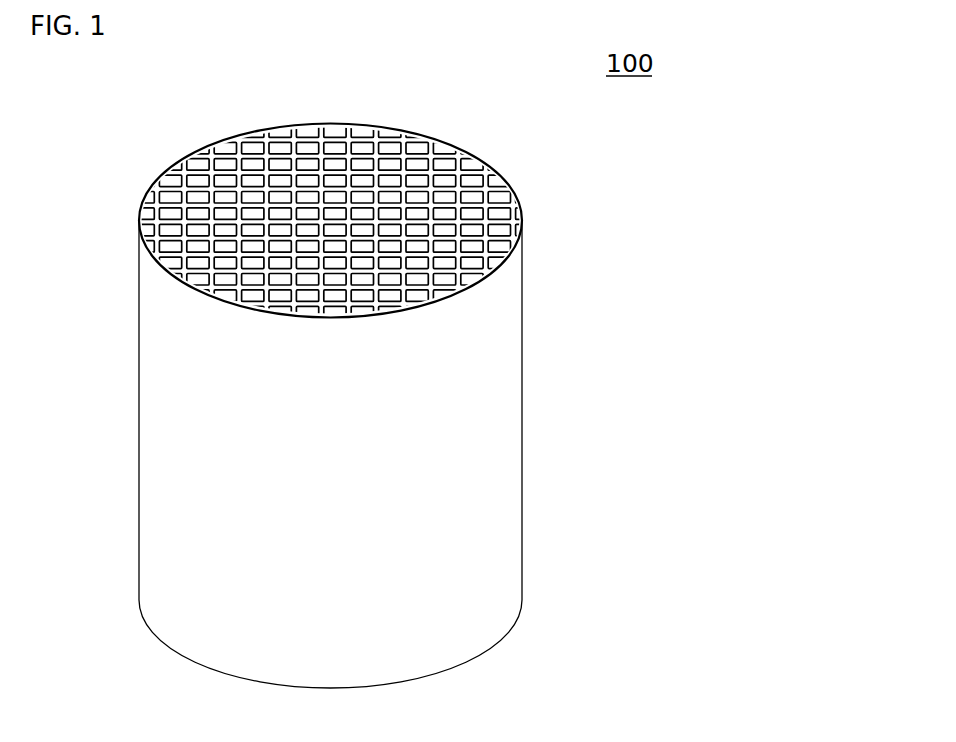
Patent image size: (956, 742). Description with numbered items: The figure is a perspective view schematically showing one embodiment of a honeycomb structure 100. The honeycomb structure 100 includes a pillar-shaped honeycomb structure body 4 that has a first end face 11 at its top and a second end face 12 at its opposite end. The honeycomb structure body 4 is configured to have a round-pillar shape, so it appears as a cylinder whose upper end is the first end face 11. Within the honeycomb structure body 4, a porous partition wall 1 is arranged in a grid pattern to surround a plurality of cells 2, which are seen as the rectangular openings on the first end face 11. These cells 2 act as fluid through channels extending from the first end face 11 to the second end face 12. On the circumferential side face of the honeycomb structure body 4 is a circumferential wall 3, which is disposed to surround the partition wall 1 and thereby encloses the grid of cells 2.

The honeycomb structure 100 is at (364, 405).
The partition wall 1 is at (337, 206).
The cells 2 is at (473, 210).
The circumferential wall 3 is at (492, 348).
The honeycomb structure body 4 is at (526, 263).
The first end face 11 is at (357, 201).
The second end face 12 is at (163, 653).